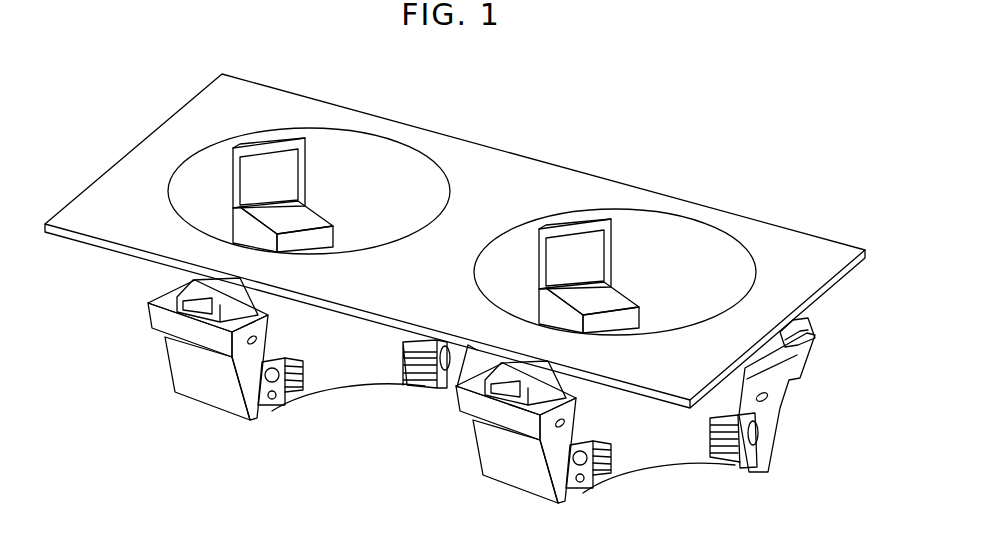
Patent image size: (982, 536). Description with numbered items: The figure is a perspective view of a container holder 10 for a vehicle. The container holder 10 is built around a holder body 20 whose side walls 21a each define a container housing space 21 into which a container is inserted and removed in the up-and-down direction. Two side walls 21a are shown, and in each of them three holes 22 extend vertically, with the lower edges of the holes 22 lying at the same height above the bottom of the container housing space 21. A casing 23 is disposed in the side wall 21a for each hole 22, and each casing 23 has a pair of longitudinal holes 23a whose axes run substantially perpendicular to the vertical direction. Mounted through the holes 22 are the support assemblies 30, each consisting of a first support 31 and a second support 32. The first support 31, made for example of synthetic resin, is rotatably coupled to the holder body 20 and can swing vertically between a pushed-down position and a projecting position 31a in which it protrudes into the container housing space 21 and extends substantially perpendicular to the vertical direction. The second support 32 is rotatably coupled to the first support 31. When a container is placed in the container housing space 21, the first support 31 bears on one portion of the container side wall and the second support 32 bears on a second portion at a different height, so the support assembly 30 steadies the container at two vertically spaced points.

The container holder 10 is at (455, 236).
The holder body 20 is at (458, 167).
The container housing space 21 is at (380, 192).
The side wall 21a is at (360, 358).
The hole 22 is at (235, 172).
The casing 23 is at (198, 370).
The longitudinal hole 23a is at (250, 342).
The support assembly 30 is at (406, 202).
The first support 31 is at (406, 207).
The projecting position 31a is at (240, 222).
The second support 32 is at (278, 172).